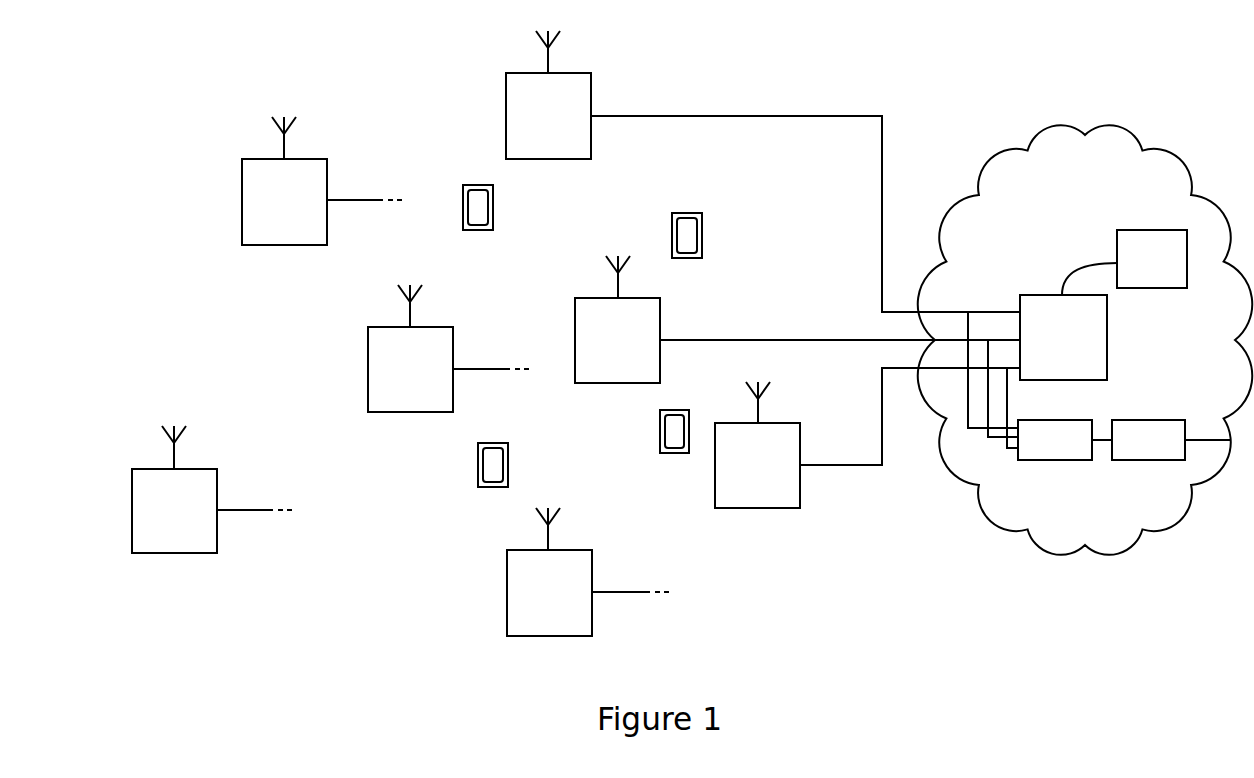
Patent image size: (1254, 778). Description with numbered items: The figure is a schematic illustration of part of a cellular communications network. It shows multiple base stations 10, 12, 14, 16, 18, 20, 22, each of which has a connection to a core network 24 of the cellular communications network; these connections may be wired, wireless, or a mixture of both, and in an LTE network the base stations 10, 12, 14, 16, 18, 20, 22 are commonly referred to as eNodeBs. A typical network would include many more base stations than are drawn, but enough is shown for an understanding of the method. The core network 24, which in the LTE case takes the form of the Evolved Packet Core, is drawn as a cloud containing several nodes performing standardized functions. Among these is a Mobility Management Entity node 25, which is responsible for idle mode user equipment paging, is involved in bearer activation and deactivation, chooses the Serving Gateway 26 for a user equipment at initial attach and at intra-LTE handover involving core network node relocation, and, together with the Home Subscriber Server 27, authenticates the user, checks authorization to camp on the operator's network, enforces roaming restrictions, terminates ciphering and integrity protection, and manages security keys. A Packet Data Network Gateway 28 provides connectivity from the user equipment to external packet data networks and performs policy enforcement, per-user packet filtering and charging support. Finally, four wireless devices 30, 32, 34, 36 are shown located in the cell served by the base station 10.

The base station 10 is at (575, 334).
The base station 12 is at (715, 490).
The base station 14 is at (506, 110).
The base station 16 is at (242, 207).
The base station 18 is at (368, 362).
The base station 20 is at (132, 505).
The base station 22 is at (507, 585).
The core network 24 is at (1120, 138).
The Mobility Management Entity node 25 is at (1107, 357).
The Serving Gateway 26 is at (1043, 460).
The Home Subscriber Server 27 is at (1160, 288).
The Packet Data Network Gateway 28 is at (1127, 460).
The wireless device 30 is at (493, 203).
The wireless device 32 is at (702, 235).
The wireless device 34 is at (660, 433).
The wireless device 36 is at (478, 468).